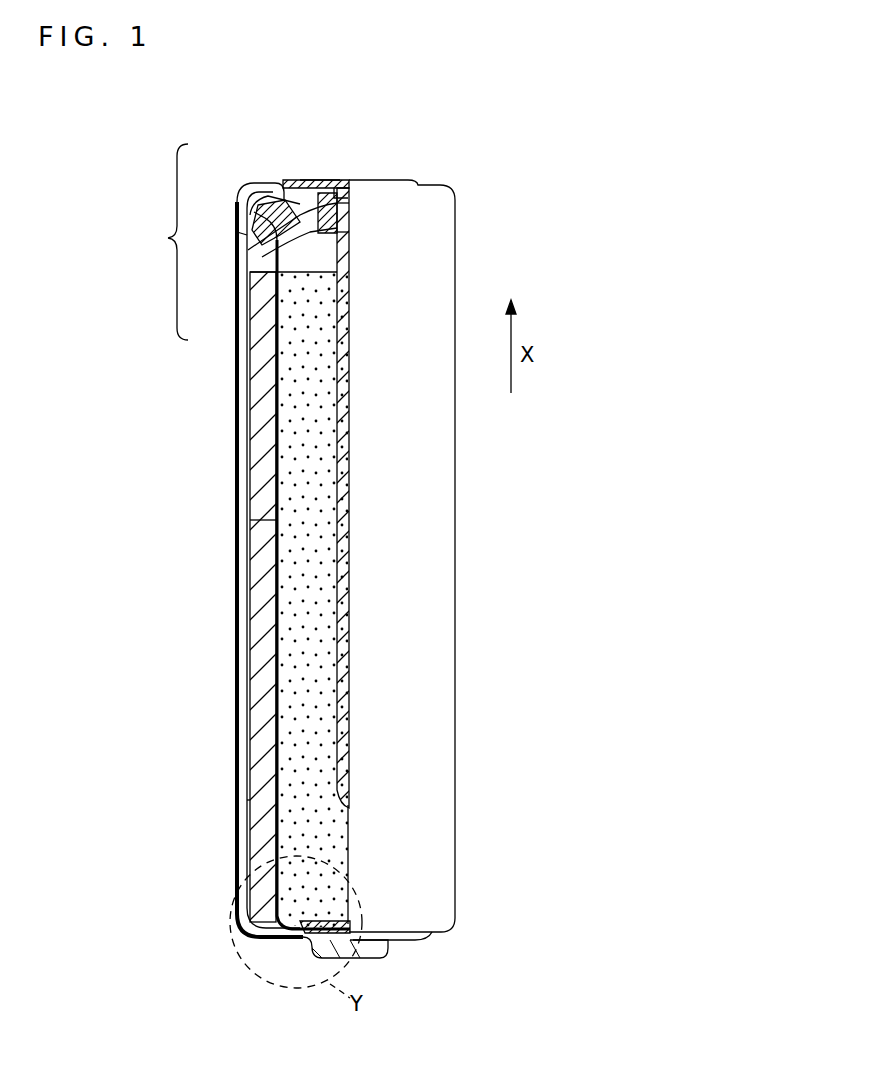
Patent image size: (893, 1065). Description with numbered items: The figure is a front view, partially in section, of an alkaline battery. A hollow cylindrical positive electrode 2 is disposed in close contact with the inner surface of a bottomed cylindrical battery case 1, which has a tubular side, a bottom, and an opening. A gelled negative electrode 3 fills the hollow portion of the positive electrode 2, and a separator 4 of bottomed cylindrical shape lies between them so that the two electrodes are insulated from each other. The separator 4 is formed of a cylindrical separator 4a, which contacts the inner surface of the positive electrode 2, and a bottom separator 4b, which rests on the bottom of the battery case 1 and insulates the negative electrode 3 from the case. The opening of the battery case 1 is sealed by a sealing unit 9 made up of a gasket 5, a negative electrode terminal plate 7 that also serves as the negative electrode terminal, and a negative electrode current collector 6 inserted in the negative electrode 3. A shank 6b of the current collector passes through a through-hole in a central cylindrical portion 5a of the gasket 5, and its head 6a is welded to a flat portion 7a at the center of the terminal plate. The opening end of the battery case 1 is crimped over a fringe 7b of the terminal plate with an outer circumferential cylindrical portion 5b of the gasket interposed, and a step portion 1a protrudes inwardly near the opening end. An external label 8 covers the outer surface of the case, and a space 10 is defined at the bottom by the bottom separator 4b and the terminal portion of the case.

The battery case 1 is at (245, 587).
The step portion 1a is at (245, 231).
The positive electrode 2 is at (262, 802).
The negative electrode 3 is at (302, 468).
The separator 4 is at (262, 657).
The cylindrical separator 4a is at (262, 525).
The bottom separator 4b is at (300, 940).
The gasket 5 is at (262, 250).
The central cylindrical portion 5a is at (345, 233).
The outer circumferential cylindrical portion 5b is at (345, 205).
The negative electrode current collector 6 is at (337, 323).
The head 6a is at (338, 182).
The shank 6b is at (337, 718).
The negative electrode terminal plate 7 is at (300, 182).
The flat portion 7a is at (330, 182).
The fringe 7b is at (252, 206).
The external label 8 is at (240, 862).
The sealing unit 9 is at (166, 242).
The space 10 is at (315, 955).